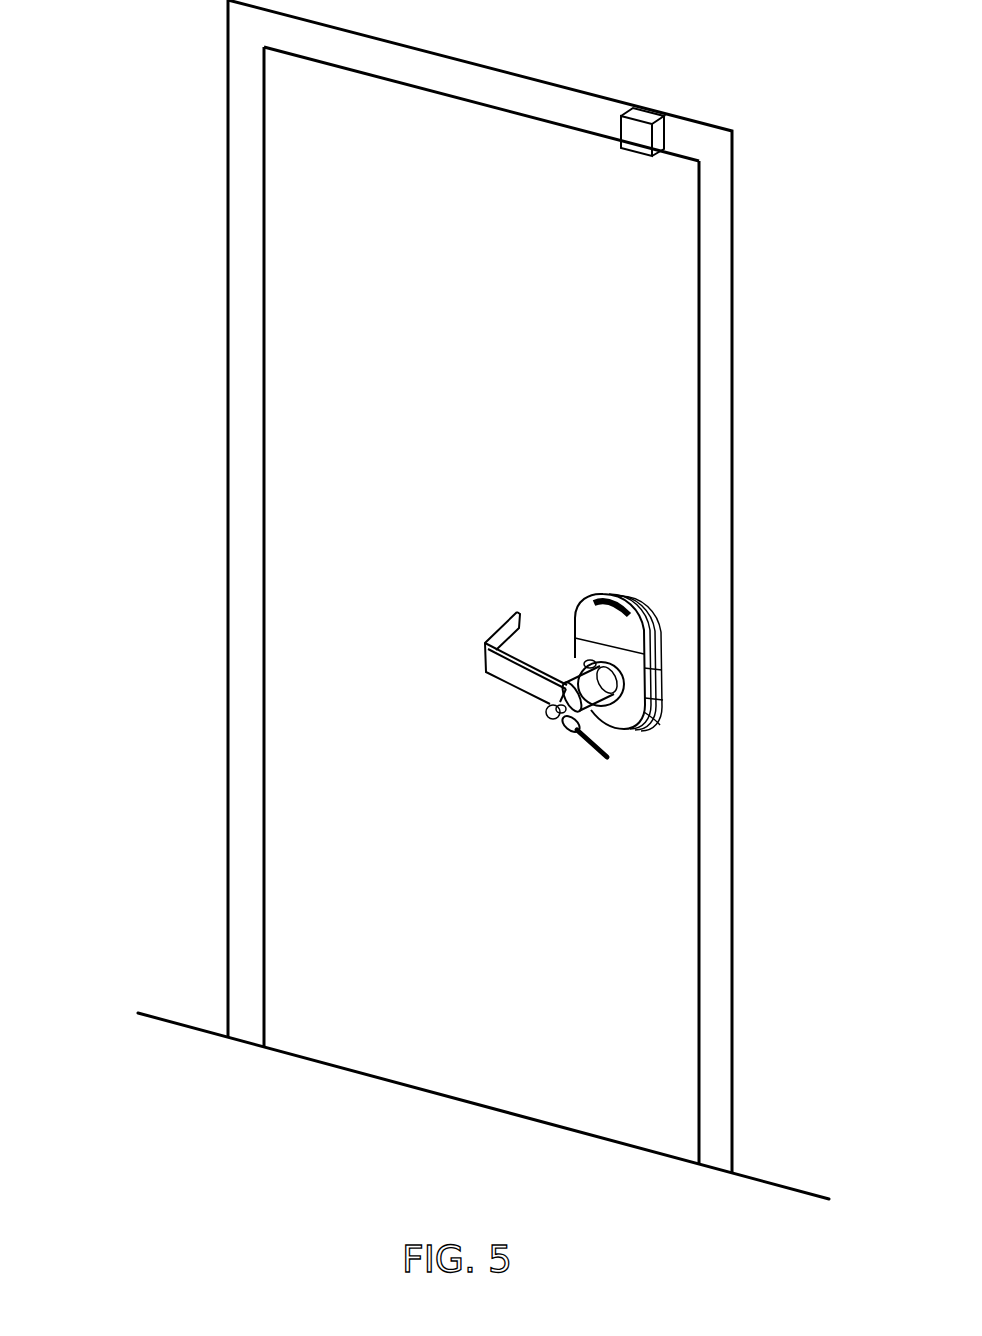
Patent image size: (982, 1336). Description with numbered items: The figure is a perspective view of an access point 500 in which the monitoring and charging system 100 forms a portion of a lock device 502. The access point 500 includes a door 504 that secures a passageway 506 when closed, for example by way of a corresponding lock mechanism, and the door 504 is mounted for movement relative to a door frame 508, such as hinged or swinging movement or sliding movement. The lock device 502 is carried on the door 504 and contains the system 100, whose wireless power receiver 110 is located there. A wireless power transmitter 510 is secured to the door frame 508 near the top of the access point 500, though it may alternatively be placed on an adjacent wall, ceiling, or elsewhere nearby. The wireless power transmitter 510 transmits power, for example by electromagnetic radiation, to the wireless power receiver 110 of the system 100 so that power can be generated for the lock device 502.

The access point 500 is at (84, 82).
The door 504 is at (265, 424).
The passageway 506 is at (324, 350).
The door frame 508 is at (500, 86).
The wireless power transmitter 510 is at (646, 118).
The system 100 is at (574, 636).
The wireless power receiver 110 is at (612, 597).
The lock device 502 is at (657, 725).